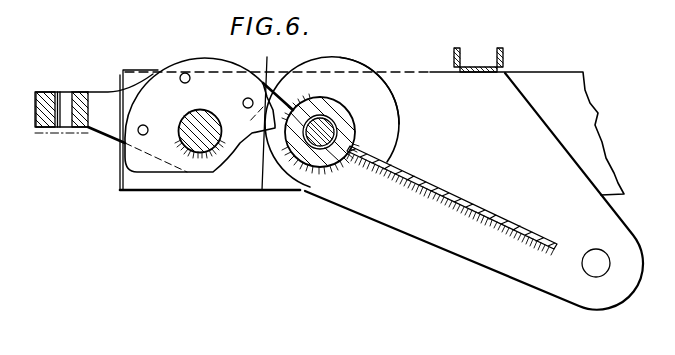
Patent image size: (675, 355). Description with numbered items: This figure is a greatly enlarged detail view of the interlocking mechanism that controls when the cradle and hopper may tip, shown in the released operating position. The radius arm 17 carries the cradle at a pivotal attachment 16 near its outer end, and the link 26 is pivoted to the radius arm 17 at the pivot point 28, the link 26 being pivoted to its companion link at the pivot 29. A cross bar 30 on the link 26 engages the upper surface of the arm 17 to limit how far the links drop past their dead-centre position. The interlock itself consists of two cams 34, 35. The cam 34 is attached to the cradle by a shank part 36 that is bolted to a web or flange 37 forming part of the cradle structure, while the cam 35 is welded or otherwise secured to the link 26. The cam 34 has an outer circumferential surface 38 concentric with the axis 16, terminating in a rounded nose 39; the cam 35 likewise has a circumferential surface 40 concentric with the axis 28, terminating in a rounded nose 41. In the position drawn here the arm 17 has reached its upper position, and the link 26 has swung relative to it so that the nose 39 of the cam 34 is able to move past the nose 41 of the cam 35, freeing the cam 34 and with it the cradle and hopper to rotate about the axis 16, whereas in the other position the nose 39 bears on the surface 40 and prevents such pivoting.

The pivotal attachment 16 is at (191, 142).
The radius arm 17 is at (578, 123).
The link 26 is at (455, 233).
The pivot point 28 is at (327, 140).
The pivot 29 is at (594, 265).
The cross bar 30 is at (505, 57).
The cam 34 is at (196, 64).
The cam 35 is at (323, 66).
The shank part 36 is at (93, 114).
The web or flange 37 is at (55, 129).
The outer circumferential surface 38 is at (162, 63).
The rounded nose 39 is at (267, 152).
The circumferential surface 40 is at (355, 64).
The rounded nose 41 is at (265, 78).